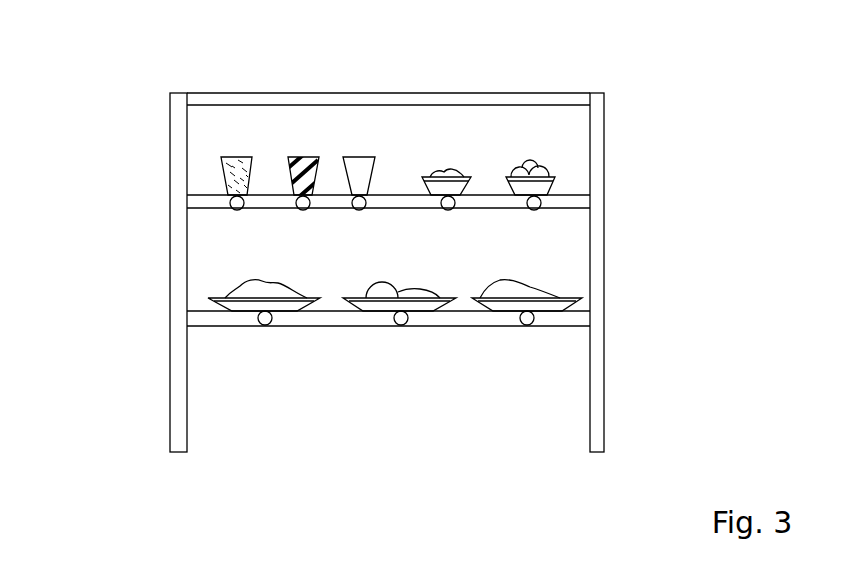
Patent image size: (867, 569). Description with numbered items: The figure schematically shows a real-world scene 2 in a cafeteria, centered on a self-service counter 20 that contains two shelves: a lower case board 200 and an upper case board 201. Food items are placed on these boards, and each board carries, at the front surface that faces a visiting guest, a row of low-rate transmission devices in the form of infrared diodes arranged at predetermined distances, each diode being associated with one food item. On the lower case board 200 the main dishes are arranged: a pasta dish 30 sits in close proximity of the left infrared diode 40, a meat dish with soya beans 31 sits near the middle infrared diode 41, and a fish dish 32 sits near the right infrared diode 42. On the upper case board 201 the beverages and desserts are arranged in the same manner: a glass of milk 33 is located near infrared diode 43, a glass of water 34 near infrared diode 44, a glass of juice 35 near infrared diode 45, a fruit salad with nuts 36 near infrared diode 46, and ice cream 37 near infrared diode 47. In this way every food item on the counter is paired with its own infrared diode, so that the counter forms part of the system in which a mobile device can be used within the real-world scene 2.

The real-world scene 2 is at (108, 65).
The self-service counter 20 is at (604, 143).
The lower case board 200 is at (567, 327).
The upper case board 201 is at (567, 210).
The pasta dish 30 is at (270, 283).
The meat dish with soya beans 31 is at (405, 289).
The fish dish 32 is at (525, 285).
The glass of milk 33 is at (238, 156).
The glass of water 34 is at (303, 156).
The glass of juice 35 is at (362, 156).
The fruit salad with nuts 36 is at (450, 172).
The ice cream 37 is at (533, 162).
The left infrared diode 40 is at (265, 325).
The middle infrared diode 41 is at (401, 325).
The right infrared diode 42 is at (527, 325).
The infrared diode 43 is at (237, 210).
The infrared diode 44 is at (303, 210).
The infrared diode 45 is at (359, 210).
The infrared diode 46 is at (448, 210).
The infrared diode 47 is at (534, 210).